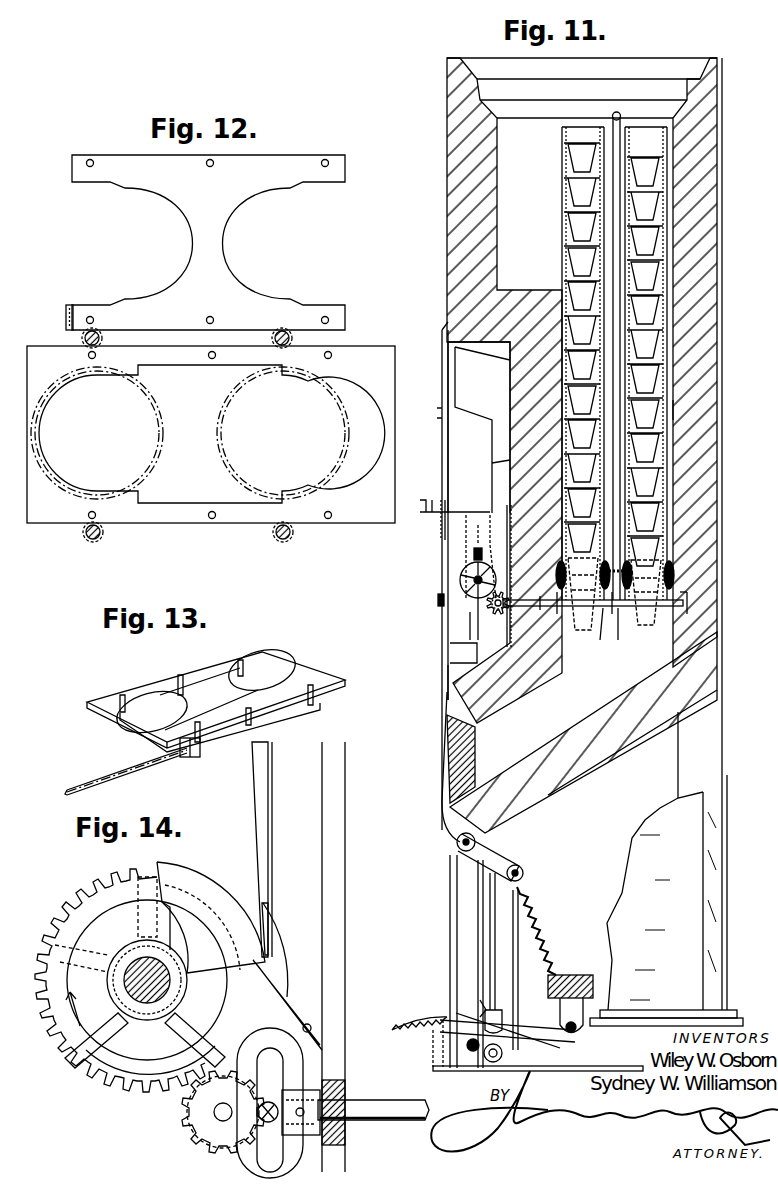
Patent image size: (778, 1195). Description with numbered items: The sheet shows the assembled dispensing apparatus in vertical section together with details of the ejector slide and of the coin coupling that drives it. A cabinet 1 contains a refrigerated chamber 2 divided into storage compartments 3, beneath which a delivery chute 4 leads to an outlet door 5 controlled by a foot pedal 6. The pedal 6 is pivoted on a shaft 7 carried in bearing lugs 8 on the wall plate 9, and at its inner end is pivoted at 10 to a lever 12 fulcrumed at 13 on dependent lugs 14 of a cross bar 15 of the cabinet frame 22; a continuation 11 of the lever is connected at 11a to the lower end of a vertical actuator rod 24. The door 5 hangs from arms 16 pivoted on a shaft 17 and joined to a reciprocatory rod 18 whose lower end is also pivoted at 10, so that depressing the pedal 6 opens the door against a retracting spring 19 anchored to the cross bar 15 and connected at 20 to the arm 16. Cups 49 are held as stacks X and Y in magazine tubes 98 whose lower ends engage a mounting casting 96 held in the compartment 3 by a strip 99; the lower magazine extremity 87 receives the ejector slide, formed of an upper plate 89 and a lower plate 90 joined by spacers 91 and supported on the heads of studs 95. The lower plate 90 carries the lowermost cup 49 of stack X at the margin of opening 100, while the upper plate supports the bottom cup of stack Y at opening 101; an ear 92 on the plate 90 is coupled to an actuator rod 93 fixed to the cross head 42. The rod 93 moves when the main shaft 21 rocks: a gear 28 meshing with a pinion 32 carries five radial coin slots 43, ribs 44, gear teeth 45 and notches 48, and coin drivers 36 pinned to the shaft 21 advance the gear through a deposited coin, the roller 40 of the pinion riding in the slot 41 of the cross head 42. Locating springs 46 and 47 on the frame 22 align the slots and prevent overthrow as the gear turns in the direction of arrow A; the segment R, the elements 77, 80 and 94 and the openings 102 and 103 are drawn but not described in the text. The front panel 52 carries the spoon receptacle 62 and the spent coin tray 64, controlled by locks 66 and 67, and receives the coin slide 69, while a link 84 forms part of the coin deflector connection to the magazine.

In FIG. 11, the cabinet 1 is at (712, 262).
In FIG. 11, the refrigerated chamber 2 is at (526, 192).
In FIG. 11, the storage compartment 3 is at (700, 414).
In FIG. 11, the delivery chute 4 is at (570, 700).
In FIG. 11, the outlet door 5 is at (480, 750).
In FIG. 11, the foot pedal 6 is at (408, 1020).
In FIG. 11, the shaft 7 is at (472, 1006).
In FIG. 11, the bearing lugs 8 is at (447, 1072).
In FIG. 11, the wall plate 9 is at (432, 1050).
In FIG. 11, the pivot 10 is at (508, 1042).
In FIG. 11, the continuation of lever 11 is at (492, 1062).
In FIG. 11, the connection 11a is at (467, 1051).
In FIG. 11, the lever 12 is at (507, 1035).
In FIG. 11, the fulcrum 13 is at (575, 1025).
In FIG. 11, the dependent lugs 14 is at (560, 1015).
In FIG. 11, the cross bar 15 is at (573, 973).
In FIG. 11, the door supporting arms 16 is at (440, 820).
In FIG. 11, the shaft 17 is at (456, 845).
In FIG. 11, the reciprocatory actuating rod 18 is at (519, 1000).
In FIG. 11, the retracting spring 19 is at (546, 931).
In FIG. 11, the spring connection 20 is at (524, 871).
In FIG. 11, the main shaft 21 is at (470, 565).
In FIG. 14, the main shaft 21 is at (172, 985).
In FIG. 11, the cabinet frame 22 is at (507, 510).
In FIG. 14, the cabinet frame 22 is at (298, 957).
In FIG. 11, the vertical reciprocatory actuator rod 24 is at (488, 942).
In FIG. 11, the gear 28 is at (460, 578).
In FIG. 14, the gear 28 is at (131, 980).
In FIG. 11, the gear pinion 32 is at (470, 607).
In FIG. 14, the gear pinion 32 is at (223, 1112).
In FIG. 14, the coin engaging actuators 36 is at (86, 951).
In FIG. 11, the roller 40 is at (646, 598).
In FIG. 14, the roller 40 is at (268, 1100).
In FIG. 14, the slot 41 is at (268, 1159).
In FIG. 11, the cross head 42 is at (494, 614).
In FIG. 14, the cross head 42 is at (237, 1168).
In FIG. 14, the radial slots 43 is at (146, 876).
In FIG. 14, the rib 44 is at (70, 900).
In FIG. 14, the gear teeth 45 is at (85, 888).
In FIG. 14, the locating spring 46 is at (270, 930).
In FIG. 14, the locating spring 47 is at (283, 990).
In FIG. 14, the notches 48 is at (162, 868).
In FIG. 11, the cup 49 is at (588, 539).
In FIG. 14, the cup 49 is at (255, 980).
In FIG. 11, the front panel 52 is at (446, 676).
In FIG. 11, the spoon receptacle 62 is at (479, 427).
In FIG. 11, the spent coin tray 64 is at (463, 654).
In FIG. 11, the lock 66 is at (437, 412).
In FIG. 11, the lock 67 is at (437, 600).
In FIG. 11, the coin slide 69 is at (440, 518).
In FIG. 11, the guide 77 is at (474, 557).
In FIG. 11, the bracket 80 is at (423, 505).
In FIG. 11, the link 84 is at (466, 620).
In FIG. 11, the article magazine 87 is at (583, 630).
In FIG. 11, the upper plate 89 is at (629, 634).
In FIG. 12, the upper plate 89 is at (211, 436).
In FIG. 13, the upper plate 89 is at (312, 672).
In FIG. 11, the lower plate 90 is at (603, 634).
In FIG. 12, the lower plate 90 is at (208, 242).
In FIG. 13, the lower plate 90 is at (275, 720).
In FIG. 13, the spacers 91 is at (180, 676).
In FIG. 12, the ear 92 is at (68, 305).
In FIG. 13, the ear 92 is at (200, 755).
In FIG. 11, the actuator rod 93 is at (535, 606).
In FIG. 13, the actuator rod 93 is at (130, 770).
In FIG. 14, the actuator rod 93 is at (372, 1105).
In FIG. 12, the washer 94 is at (81, 340).
In FIG. 12, the studs 95 is at (103, 340).
In FIG. 11, the mounting casting 96 is at (675, 575).
In FIG. 11, the magazine tubes 98 is at (562, 268).
In FIG. 12, the magazine tubes 98 is at (152, 414).
In FIG. 11, the strip 99 is at (616, 112).
In FIG. 12, the opening 100 is at (228, 242).
In FIG. 13, the opening 100 is at (218, 700).
In FIG. 12, the opening 101 is at (40, 436).
In FIG. 13, the opening 101 is at (132, 700).
In FIG. 12, the cutout 102 is at (190, 247).
In FIG. 13, the cutout 102 is at (173, 720).
In FIG. 12, the opening 103 is at (382, 435).
In FIG. 13, the opening 103 is at (280, 662).
In FIG. 11, the stack X is at (650, 242).
In FIG. 11, the stack Y is at (580, 230).
In FIG. 14, the sector R is at (195, 872).
In FIG. 14, the slot portion A is at (73, 1009).